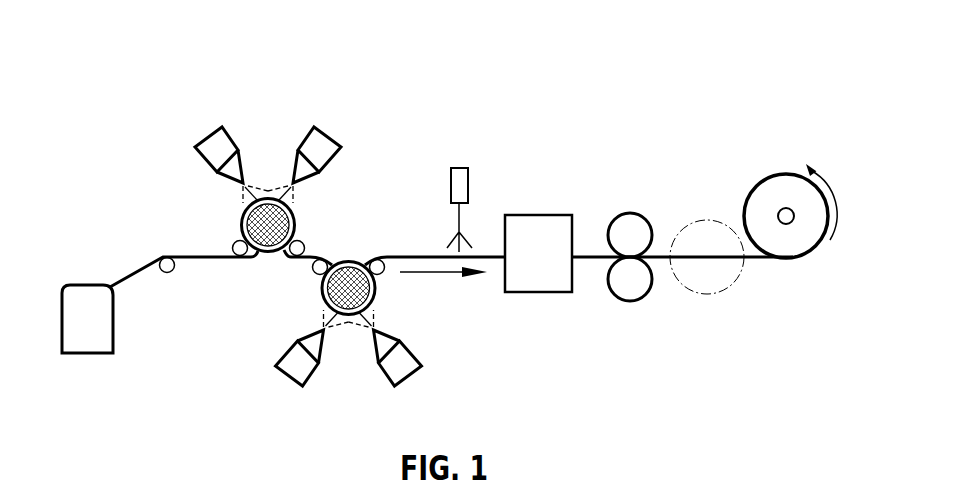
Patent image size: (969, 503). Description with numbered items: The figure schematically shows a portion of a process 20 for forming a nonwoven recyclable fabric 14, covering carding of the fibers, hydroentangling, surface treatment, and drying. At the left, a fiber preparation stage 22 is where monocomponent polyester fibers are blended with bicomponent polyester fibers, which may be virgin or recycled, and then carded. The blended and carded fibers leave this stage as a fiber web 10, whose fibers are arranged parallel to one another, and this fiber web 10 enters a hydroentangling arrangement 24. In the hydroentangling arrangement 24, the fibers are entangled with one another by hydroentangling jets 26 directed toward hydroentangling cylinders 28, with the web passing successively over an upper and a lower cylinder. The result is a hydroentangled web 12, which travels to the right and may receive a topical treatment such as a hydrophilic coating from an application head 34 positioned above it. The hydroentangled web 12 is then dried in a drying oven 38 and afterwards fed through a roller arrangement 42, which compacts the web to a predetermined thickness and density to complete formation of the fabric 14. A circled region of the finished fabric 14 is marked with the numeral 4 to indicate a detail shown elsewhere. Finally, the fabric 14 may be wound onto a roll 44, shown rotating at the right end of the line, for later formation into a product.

The process 20 is at (146, 58).
The fiber preparation stage 22 is at (72, 357).
The fiber web 10 is at (143, 265).
The hydroentangled web 12 is at (402, 253).
The hydroentangling arrangement 24 is at (241, 313).
The hydroentangling jets 26 is at (197, 145).
The hydroentangling cylinders 28 is at (347, 259).
The application head 34 is at (459, 163).
The drying oven 38 is at (518, 214).
The roller arrangement 42 is at (632, 196).
The fabric 14 is at (707, 255).
The detail view reference 4 is at (707, 294).
The roll 44 is at (785, 156).